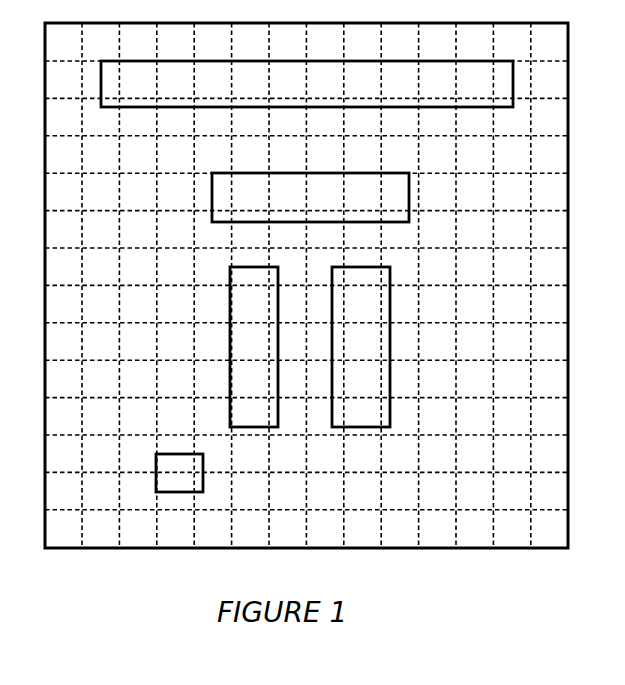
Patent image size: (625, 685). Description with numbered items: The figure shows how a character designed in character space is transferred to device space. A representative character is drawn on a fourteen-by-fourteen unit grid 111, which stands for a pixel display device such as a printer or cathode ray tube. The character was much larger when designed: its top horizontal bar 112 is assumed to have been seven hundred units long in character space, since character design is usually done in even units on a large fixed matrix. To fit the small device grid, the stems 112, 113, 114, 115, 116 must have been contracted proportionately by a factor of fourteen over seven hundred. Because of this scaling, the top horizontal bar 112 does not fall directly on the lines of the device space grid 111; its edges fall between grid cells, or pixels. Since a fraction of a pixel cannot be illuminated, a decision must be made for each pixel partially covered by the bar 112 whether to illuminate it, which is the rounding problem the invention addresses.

The unit grid 111 is at (136, 548).
The top horizontal bar 112 is at (133, 108).
The stem 113 is at (224, 173).
The stem 114 is at (230, 344).
The stem 115 is at (390, 344).
The stem 116 is at (203, 465).